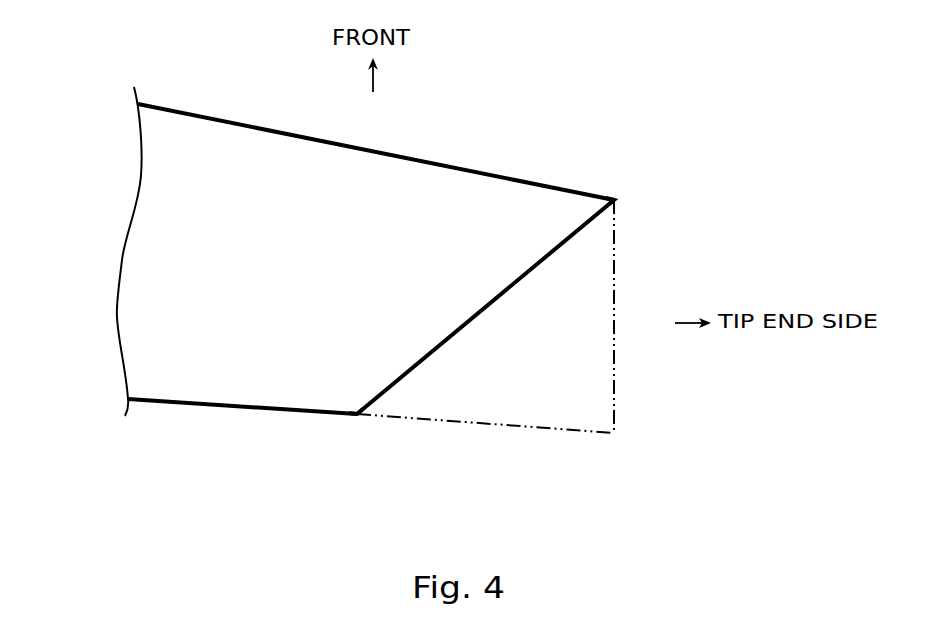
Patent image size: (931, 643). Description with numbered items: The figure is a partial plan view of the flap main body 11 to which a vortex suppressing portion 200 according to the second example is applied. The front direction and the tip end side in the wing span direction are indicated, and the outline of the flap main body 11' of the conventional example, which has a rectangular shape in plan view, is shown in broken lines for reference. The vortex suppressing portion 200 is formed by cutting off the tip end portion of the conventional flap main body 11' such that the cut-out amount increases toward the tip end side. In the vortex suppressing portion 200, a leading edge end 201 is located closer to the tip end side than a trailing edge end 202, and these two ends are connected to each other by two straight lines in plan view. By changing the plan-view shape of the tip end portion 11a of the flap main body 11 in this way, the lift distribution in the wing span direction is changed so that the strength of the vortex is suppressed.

The flap main body 11 is at (325, 251).
The tip end portion 11a is at (182, 403).
The vortex suppressing portion 200 is at (513, 207).
The leading edge end 201 is at (617, 198).
The trailing edge end 202 is at (357, 416).
The flap main body according to Conventional Example 11' is at (555, 308).